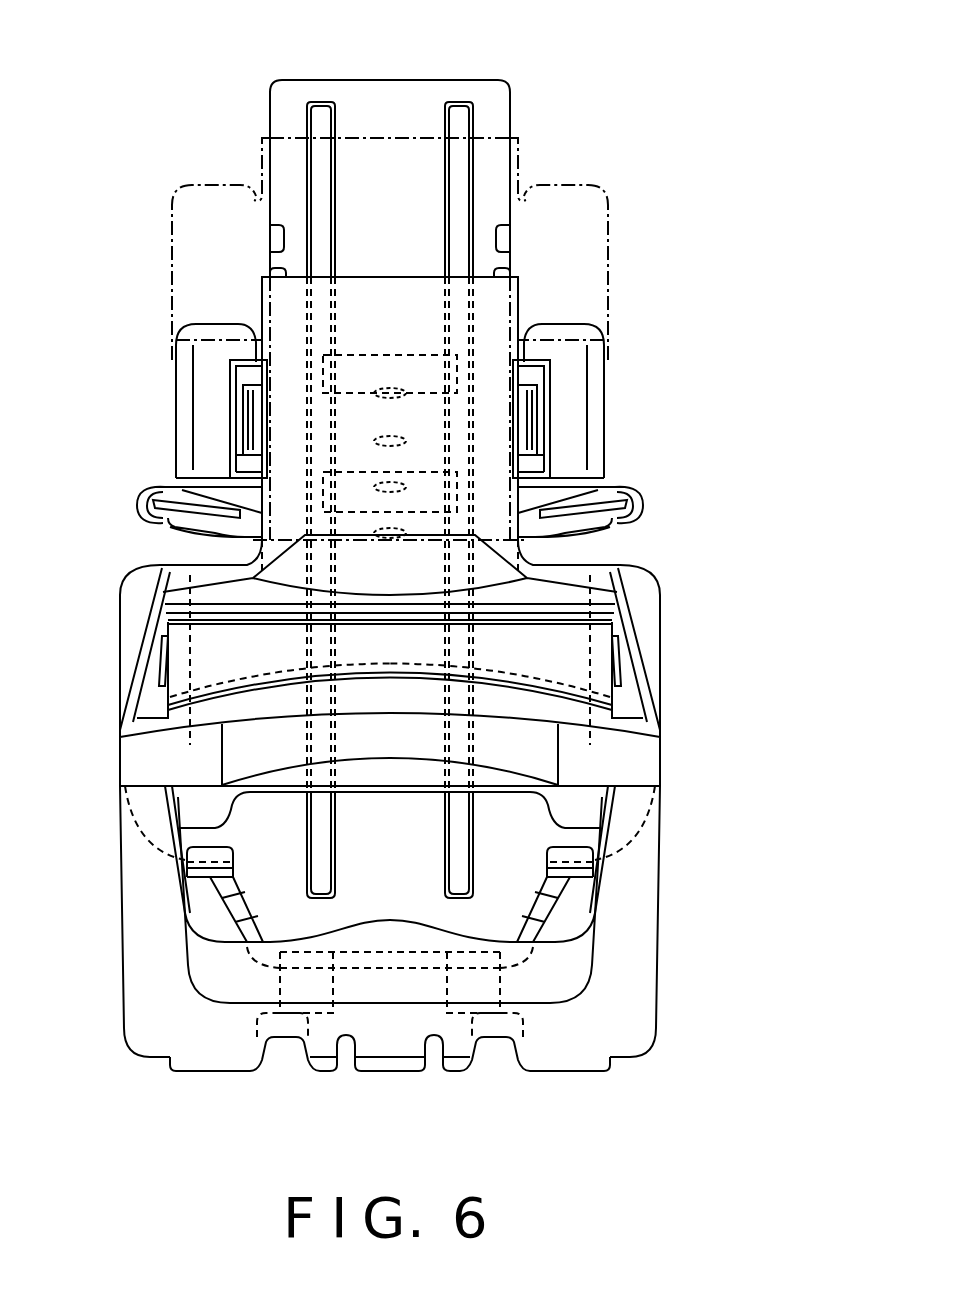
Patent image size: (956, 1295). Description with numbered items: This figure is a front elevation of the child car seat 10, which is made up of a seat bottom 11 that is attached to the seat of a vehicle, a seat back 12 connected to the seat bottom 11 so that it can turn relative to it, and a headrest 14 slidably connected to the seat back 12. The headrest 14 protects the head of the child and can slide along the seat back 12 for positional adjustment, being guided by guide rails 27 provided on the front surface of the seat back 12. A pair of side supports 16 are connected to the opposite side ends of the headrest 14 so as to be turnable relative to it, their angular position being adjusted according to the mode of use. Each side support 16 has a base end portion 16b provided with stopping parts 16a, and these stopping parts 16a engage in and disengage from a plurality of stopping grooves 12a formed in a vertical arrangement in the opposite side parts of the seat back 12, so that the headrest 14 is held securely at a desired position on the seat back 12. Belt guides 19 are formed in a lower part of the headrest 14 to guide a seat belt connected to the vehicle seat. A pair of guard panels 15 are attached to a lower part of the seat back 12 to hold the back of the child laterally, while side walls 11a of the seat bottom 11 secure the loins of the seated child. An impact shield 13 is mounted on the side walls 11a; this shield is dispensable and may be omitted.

The child car seat 10 is at (715, 548).
The seat bottom 11 is at (640, 978).
The side walls 11a is at (653, 822).
The seat back 12 is at (388, 98).
The stopping grooves 12a is at (276, 238).
The impact shield 13 is at (598, 638).
The headrest 14 is at (385, 302).
The guard panels 15 is at (134, 586).
The side supports 16 is at (173, 291).
The stopping parts 16a is at (242, 376).
The base end portion 16b is at (534, 392).
The belt guides 19 is at (152, 488).
The guide rails 27 is at (320, 110).